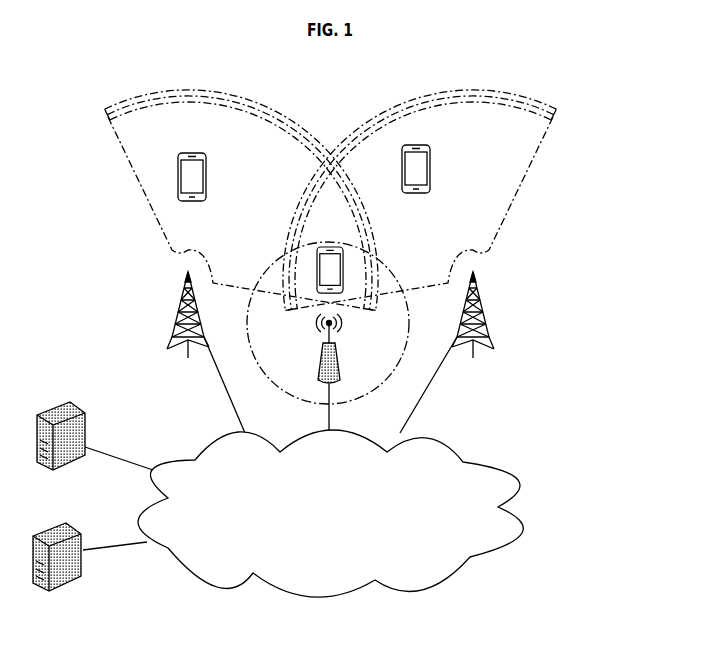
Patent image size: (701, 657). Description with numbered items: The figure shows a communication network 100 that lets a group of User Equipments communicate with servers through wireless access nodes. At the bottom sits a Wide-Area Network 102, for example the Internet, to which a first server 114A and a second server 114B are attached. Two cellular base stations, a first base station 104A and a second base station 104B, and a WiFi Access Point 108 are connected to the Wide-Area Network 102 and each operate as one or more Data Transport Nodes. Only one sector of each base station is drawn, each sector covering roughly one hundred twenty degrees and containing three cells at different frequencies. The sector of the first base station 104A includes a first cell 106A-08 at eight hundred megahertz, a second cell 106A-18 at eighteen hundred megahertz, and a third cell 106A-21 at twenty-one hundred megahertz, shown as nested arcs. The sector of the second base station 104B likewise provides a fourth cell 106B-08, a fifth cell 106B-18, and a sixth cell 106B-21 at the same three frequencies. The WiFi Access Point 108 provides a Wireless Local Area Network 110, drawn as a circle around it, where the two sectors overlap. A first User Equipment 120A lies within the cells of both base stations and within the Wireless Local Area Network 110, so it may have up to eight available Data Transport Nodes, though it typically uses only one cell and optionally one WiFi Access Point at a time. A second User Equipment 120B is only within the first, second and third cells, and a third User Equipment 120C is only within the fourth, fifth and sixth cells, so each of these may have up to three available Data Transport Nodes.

The communication network 100 is at (43, 220).
The Wide-Area Network 102 is at (498, 463).
The first base station 104A is at (180, 310).
The second base station 104B is at (482, 310).
The first cell 106A-08 is at (222, 86).
The second cell 106A-18 is at (182, 91).
The third cell 106A-21 is at (119, 102).
The fourth cell 106B-08 is at (438, 86).
The fifth cell 106B-18 is at (485, 92).
The sixth cell 106B-21 is at (545, 102).
The WiFi Access Point 108 is at (341, 355).
The Wireless Local Area Network 110 is at (300, 407).
The server 114A is at (67, 470).
The server 114B is at (68, 585).
The first User Equipment 120A is at (344, 262).
The second User Equipment 120B is at (209, 170).
The third User Equipment 120C is at (432, 160).